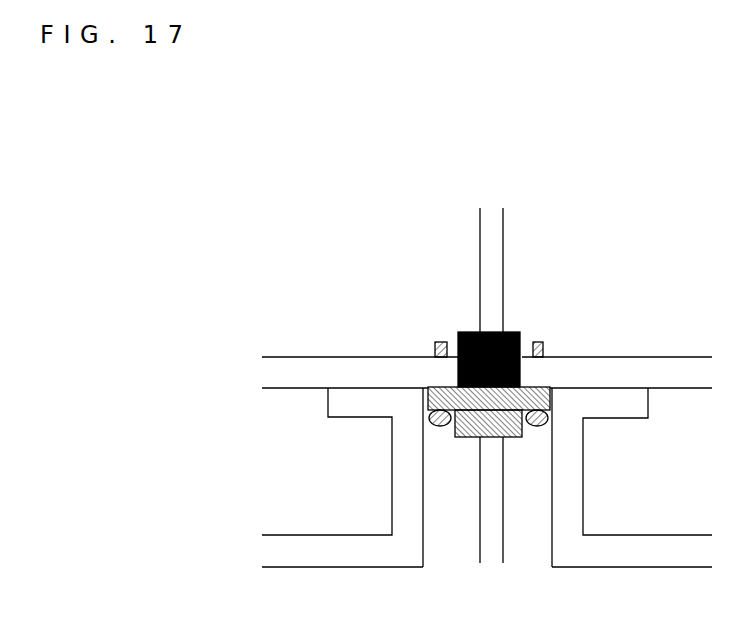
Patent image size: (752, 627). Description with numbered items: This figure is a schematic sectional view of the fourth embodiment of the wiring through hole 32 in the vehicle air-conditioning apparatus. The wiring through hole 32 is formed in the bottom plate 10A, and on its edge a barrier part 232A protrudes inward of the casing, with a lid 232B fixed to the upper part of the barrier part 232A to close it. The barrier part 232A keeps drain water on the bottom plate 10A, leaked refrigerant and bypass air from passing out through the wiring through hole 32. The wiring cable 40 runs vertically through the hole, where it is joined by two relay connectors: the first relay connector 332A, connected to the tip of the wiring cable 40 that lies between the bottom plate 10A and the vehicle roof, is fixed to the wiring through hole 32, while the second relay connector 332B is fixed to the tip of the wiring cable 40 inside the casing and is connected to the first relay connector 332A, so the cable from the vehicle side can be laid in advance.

The wiring cable 40 is at (490, 270).
The lid 232B is at (282, 373).
The barrier part 232A is at (400, 488).
The bottom plate 10A is at (660, 535).
The wiring through hole 32 is at (550, 543).
The second relay connector 332B is at (468, 333).
The first relay connector 332A is at (468, 440).